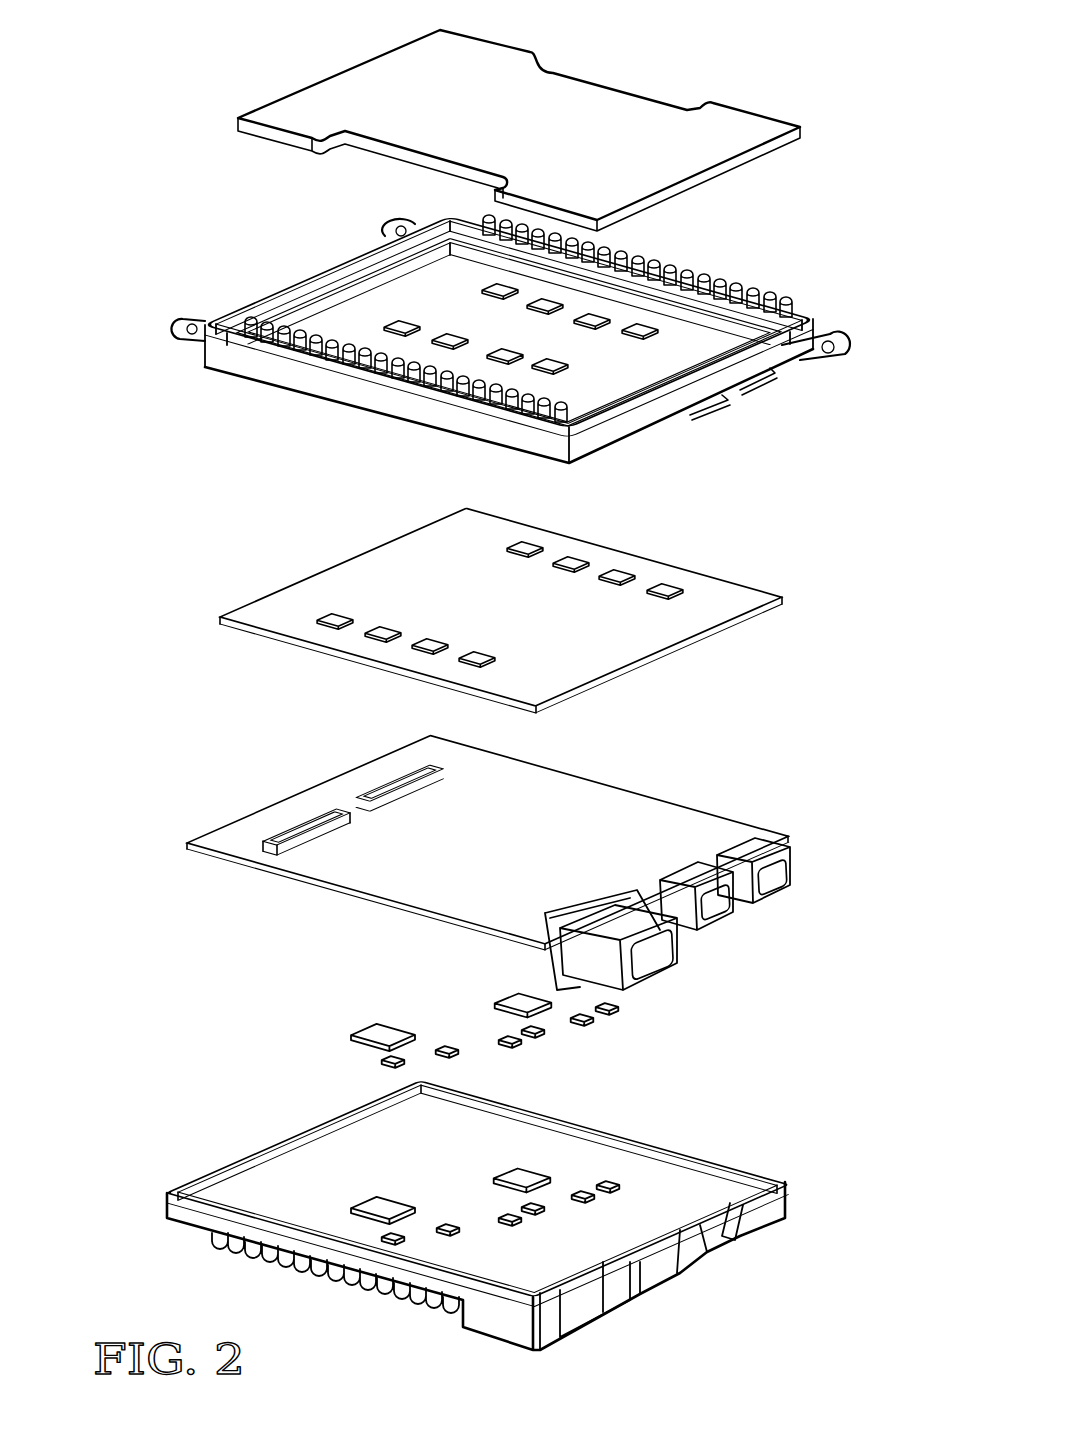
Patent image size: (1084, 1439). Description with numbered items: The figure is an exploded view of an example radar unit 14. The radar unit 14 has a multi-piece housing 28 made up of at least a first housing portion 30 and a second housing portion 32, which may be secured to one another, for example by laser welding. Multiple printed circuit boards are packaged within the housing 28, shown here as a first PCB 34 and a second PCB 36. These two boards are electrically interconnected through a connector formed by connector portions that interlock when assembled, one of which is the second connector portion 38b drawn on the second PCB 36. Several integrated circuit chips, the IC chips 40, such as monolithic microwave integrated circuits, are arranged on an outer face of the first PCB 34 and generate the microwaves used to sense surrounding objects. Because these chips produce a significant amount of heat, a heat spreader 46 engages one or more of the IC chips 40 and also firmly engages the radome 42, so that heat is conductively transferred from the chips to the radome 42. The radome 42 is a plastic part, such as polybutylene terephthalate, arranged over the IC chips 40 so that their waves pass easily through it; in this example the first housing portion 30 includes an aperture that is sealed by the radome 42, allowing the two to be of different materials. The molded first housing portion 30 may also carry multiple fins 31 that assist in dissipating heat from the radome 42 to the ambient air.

The radar unit 14 is at (267, 43).
The multi-piece housing 28 is at (790, 1170).
The first housing portion 30 is at (637, 422).
The fins 31 is at (283, 327).
The second housing portion 32 is at (753, 1222).
The first PCB 34 is at (435, 565).
The second PCB 36 is at (652, 833).
The second connector portion 38b is at (377, 780).
The IC chips 40 is at (382, 632).
The radome 42 is at (505, 57).
The heat spreader 46 is at (460, 343).